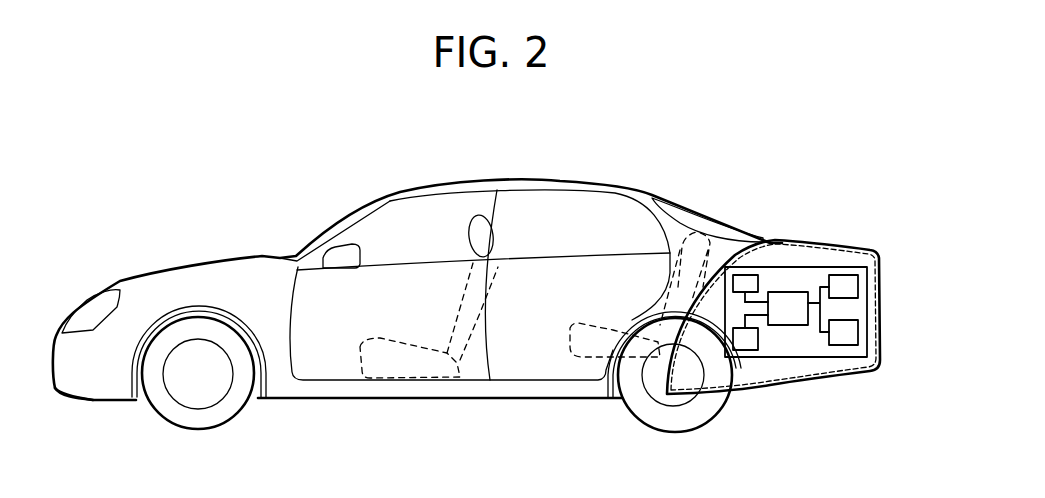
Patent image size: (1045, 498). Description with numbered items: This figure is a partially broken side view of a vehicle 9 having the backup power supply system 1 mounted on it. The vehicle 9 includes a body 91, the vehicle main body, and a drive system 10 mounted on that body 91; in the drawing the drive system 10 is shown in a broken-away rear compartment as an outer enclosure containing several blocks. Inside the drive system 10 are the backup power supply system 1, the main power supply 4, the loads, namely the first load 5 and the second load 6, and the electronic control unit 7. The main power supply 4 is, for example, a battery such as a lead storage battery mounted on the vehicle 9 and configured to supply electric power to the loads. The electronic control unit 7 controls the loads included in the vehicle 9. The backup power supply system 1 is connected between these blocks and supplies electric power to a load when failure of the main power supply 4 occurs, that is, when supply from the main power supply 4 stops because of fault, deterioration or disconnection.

The backup power supply system 1 is at (792, 313).
The main power supply 4 is at (735, 340).
The first load 5 is at (847, 285).
The second load 6 is at (847, 333).
The electronic control unit 7 is at (735, 285).
The vehicle 9 is at (700, 210).
The drive system 10 is at (805, 265).
The body 91 is at (620, 197).